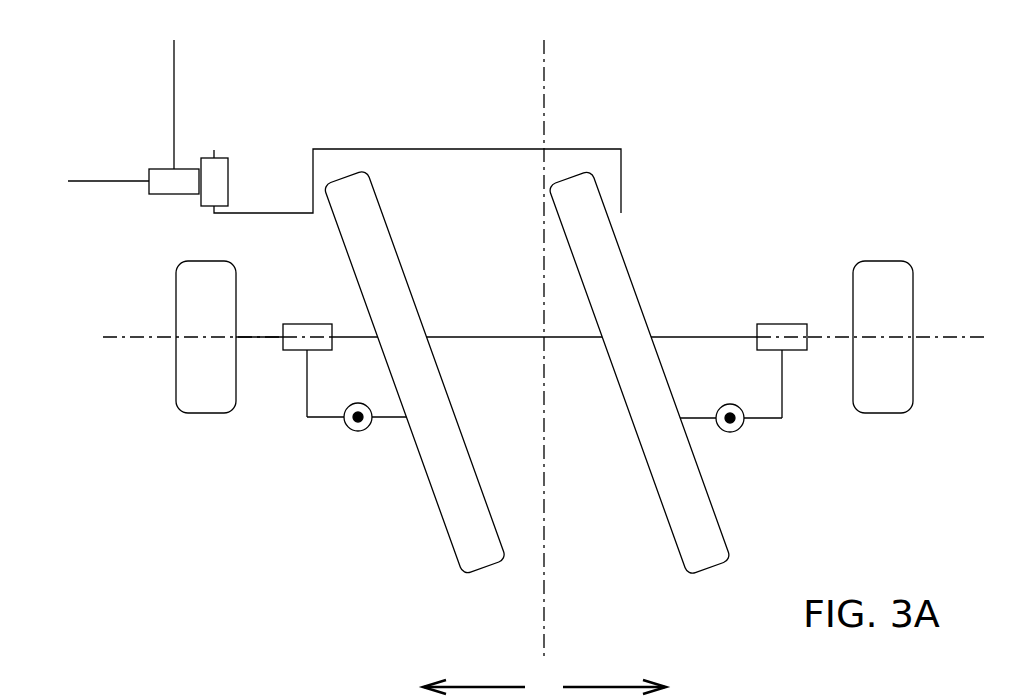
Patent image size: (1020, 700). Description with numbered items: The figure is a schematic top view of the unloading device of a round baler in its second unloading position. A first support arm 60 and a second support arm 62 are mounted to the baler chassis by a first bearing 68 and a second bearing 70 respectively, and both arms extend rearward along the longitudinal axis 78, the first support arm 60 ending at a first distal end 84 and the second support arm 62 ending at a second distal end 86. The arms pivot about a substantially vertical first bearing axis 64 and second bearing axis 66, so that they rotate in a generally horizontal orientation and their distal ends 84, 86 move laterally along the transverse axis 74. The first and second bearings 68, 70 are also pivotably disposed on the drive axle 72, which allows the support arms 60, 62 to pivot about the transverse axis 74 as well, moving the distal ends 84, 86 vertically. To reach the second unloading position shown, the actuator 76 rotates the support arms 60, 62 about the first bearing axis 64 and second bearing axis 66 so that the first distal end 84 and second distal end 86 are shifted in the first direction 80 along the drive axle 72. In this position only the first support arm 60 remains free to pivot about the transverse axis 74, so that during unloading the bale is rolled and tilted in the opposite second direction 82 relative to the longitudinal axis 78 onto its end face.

The first support arm 60 is at (470, 530).
The second support arm 62 is at (707, 540).
The first bearing axis 64 is at (357, 431).
The second bearing axis 66 is at (729, 432).
The first bearing 68 is at (308, 332).
The second bearing 70 is at (784, 332).
The drive axle 72 is at (494, 345).
The transverse axis 74 is at (112, 335).
The actuator 76 is at (162, 178).
The longitudinal axis 78 is at (546, 70).
The first direction 80 is at (595, 685).
The second direction 82 is at (460, 685).
The first distal end 84 is at (482, 576).
The second distal end 86 is at (711, 578).